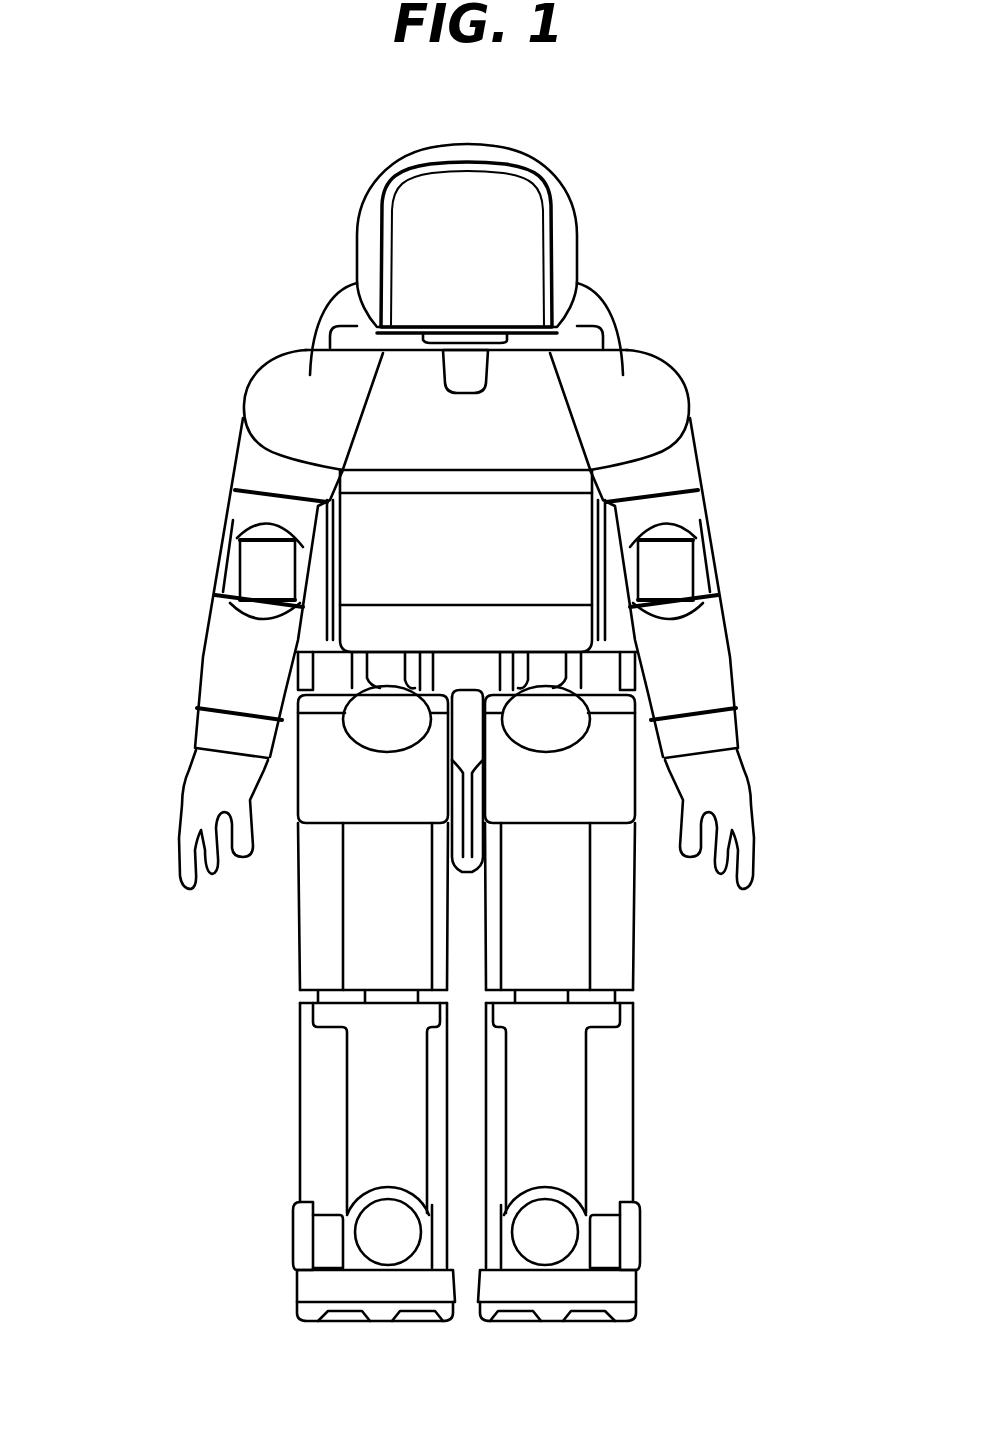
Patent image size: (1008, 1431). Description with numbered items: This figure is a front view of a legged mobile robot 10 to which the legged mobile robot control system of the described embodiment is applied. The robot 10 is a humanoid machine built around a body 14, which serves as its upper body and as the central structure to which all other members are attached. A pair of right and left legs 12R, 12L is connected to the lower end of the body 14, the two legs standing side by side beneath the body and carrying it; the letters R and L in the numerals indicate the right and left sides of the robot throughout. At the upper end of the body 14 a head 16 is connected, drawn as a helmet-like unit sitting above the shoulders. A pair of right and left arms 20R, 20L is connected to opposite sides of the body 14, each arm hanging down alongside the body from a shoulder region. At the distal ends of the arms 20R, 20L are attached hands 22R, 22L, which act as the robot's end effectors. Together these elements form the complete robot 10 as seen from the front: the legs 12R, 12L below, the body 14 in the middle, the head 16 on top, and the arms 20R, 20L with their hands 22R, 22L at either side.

The legged mobile robot 10 is at (648, 285).
The right leg 12R is at (236, 1001).
The left leg 12L is at (690, 1008).
The body 14 is at (568, 583).
The head 16 is at (518, 163).
The right arm 20R is at (197, 451).
The left arm 20L is at (734, 443).
The right hand 22R is at (195, 801).
The left hand 22L is at (733, 782).